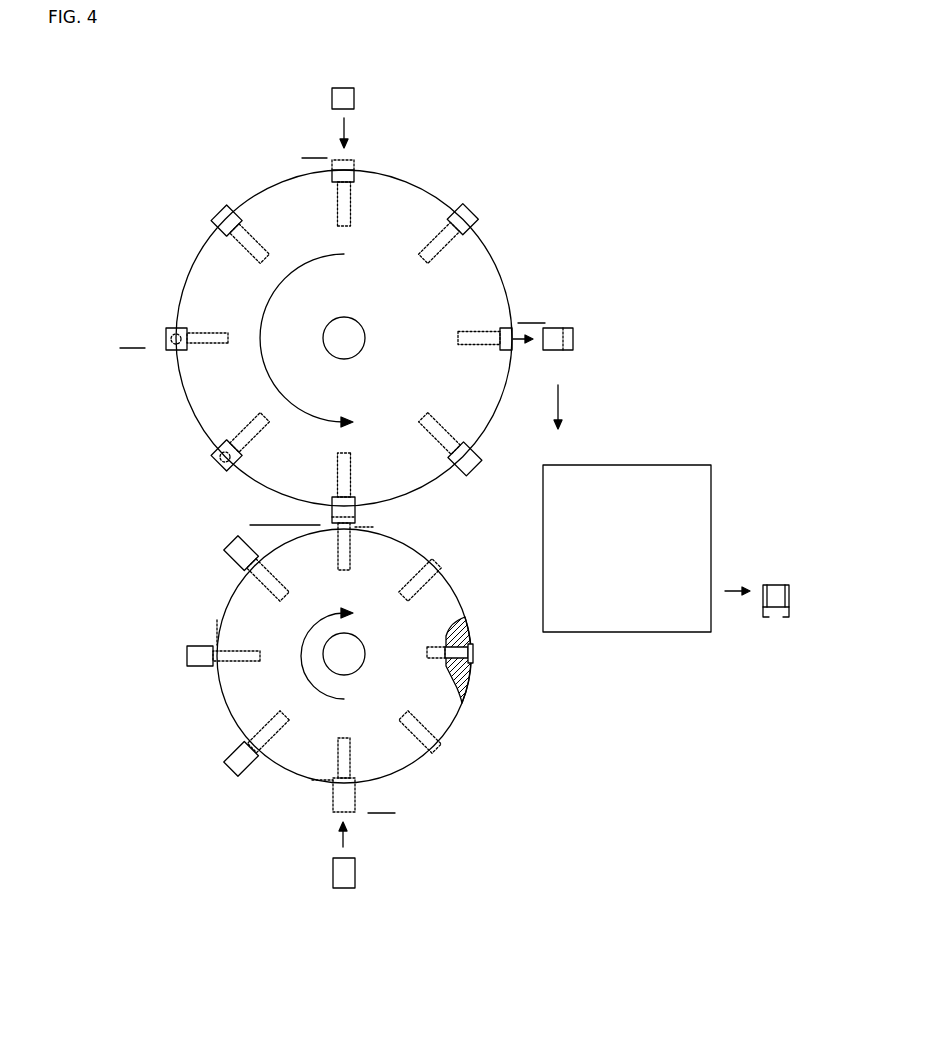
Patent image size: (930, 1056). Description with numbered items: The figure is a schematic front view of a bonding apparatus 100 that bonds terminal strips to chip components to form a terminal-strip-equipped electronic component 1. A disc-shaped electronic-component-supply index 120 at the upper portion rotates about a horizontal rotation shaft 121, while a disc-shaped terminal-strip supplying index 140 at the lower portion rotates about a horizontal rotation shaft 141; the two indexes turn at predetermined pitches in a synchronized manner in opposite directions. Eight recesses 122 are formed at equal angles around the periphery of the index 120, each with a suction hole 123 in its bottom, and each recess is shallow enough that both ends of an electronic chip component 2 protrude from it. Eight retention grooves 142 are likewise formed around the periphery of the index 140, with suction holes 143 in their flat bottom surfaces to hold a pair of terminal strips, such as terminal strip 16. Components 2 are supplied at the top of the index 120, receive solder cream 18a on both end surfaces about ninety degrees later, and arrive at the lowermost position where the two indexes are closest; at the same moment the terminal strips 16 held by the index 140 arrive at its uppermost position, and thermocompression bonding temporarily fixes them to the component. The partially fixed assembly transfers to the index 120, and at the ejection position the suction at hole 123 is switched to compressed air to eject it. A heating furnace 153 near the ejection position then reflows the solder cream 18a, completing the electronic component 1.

The terminal-strip-equipped electronic component 1 is at (776, 577).
The electronic chip component 2 is at (331, 102).
The terminal strip 16 is at (567, 350).
The solder cream 18a is at (170, 333).
The bonding apparatus 100 is at (540, 110).
The electronic-component-supply index 120 is at (268, 195).
The rotation shaft 121 is at (357, 326).
The recess 122 is at (340, 180).
The suction hole 123 is at (350, 213).
The terminal-strip supplying index 140 is at (227, 598).
The rotation shaft 141 is at (357, 645).
The retention groove 142 is at (475, 672).
The suction hole 143 is at (242, 658).
The heating furnace 153 is at (637, 475).